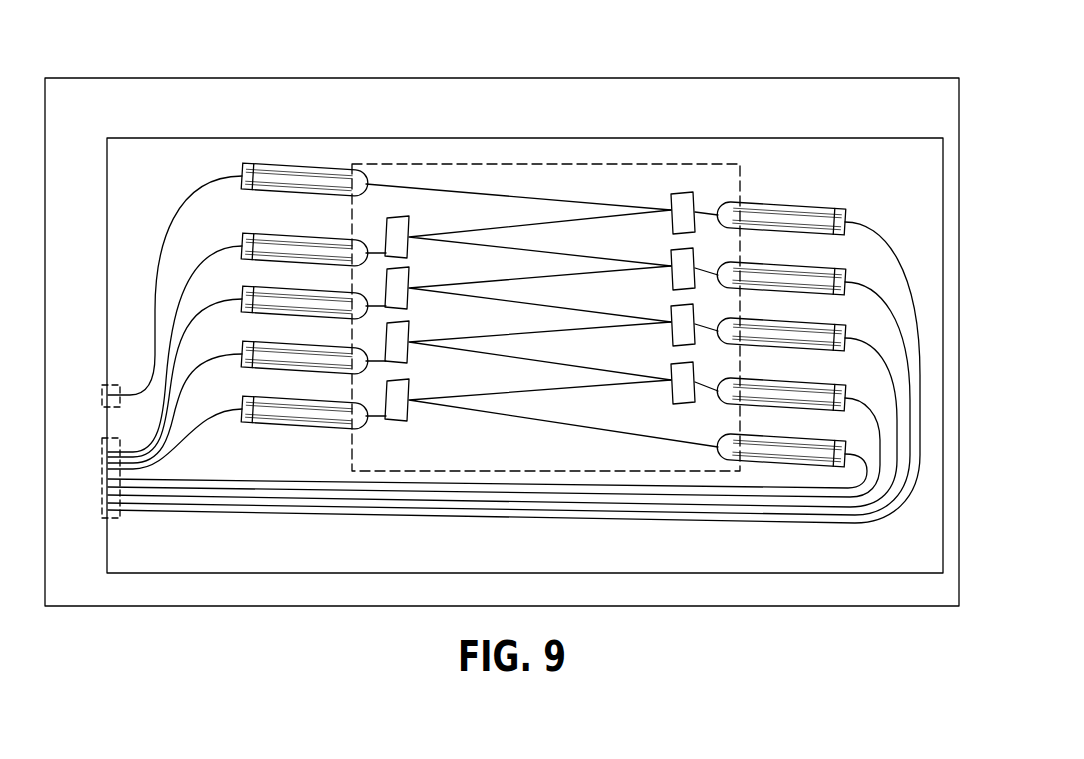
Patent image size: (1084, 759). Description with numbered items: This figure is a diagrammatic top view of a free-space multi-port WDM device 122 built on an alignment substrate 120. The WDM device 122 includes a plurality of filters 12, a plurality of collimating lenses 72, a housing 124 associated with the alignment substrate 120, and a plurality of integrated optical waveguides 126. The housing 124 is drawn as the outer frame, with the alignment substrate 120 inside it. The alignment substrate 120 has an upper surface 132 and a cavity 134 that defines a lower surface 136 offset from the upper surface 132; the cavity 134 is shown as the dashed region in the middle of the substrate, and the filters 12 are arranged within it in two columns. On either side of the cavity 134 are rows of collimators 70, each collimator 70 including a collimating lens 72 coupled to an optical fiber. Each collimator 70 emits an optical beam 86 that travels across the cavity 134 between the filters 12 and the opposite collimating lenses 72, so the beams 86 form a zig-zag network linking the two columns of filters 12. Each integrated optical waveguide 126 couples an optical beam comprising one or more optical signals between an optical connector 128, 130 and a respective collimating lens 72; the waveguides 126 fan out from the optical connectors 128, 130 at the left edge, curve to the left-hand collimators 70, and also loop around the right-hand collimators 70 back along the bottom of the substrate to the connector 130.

The filter 12 is at (411, 227).
The collimator 70 is at (331, 176).
The collimating lens 72 is at (256, 234).
The optical beam 86 is at (583, 202).
The alignment substrate 120 is at (812, 138).
The free-space multi-port WDM device 122 is at (747, 52).
The housing 124 is at (870, 78).
The integrated optical waveguide 126 is at (177, 198).
The optical connector 128 is at (102, 391).
The optical connector 130 is at (102, 453).
The upper surface 132 is at (872, 559).
The cavity 134 is at (746, 168).
The lower surface 136 is at (565, 461).